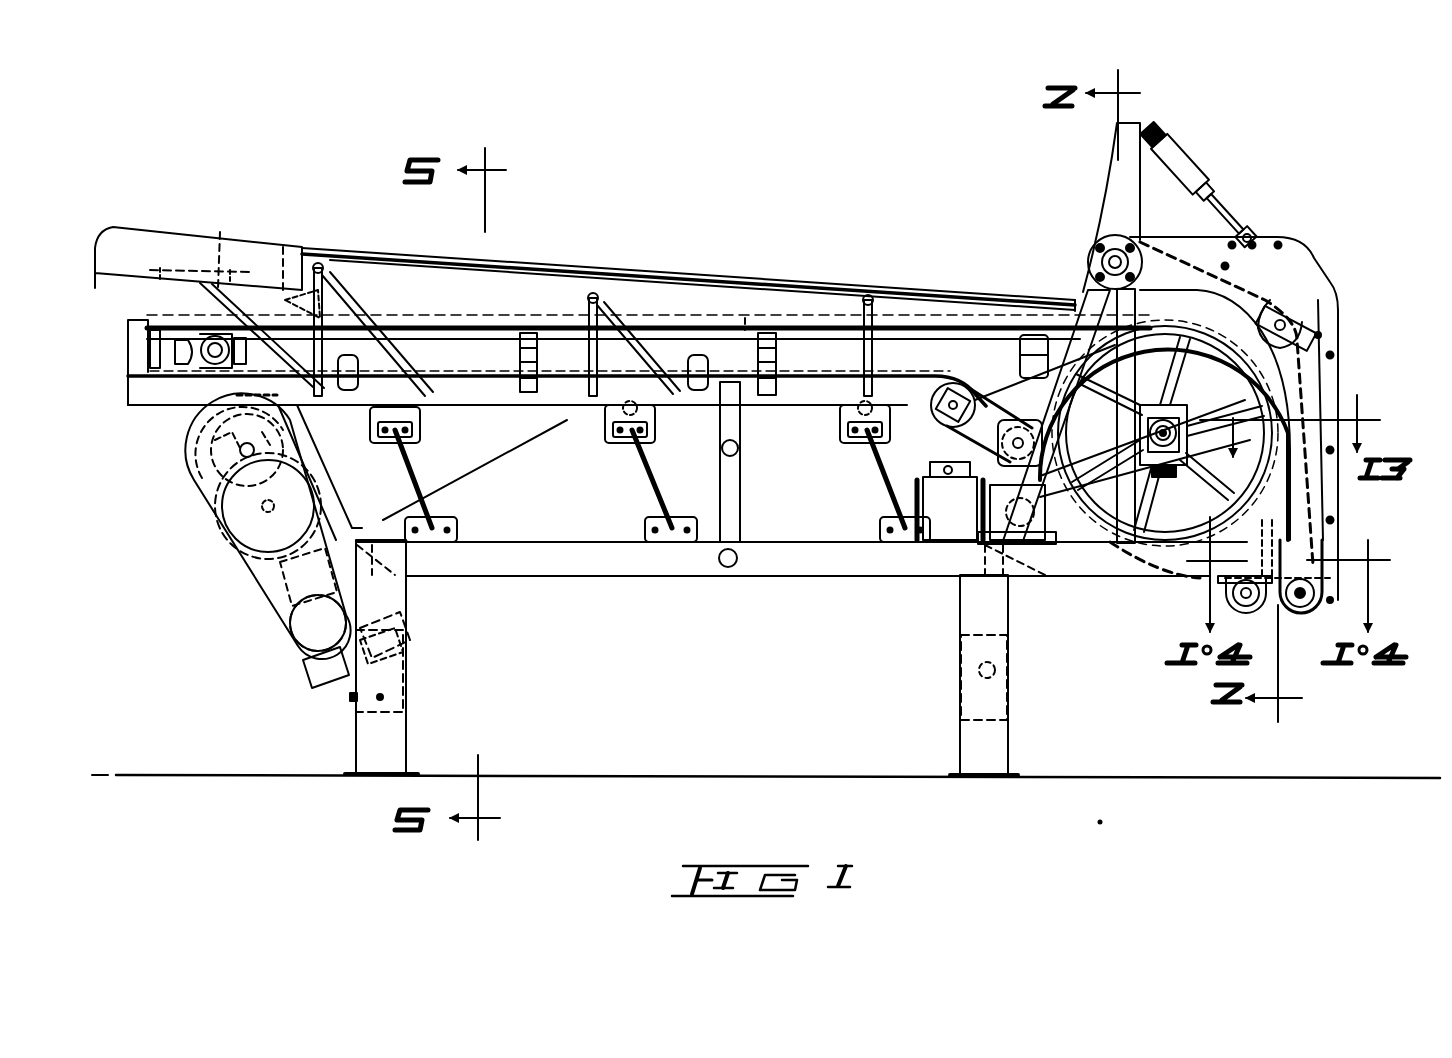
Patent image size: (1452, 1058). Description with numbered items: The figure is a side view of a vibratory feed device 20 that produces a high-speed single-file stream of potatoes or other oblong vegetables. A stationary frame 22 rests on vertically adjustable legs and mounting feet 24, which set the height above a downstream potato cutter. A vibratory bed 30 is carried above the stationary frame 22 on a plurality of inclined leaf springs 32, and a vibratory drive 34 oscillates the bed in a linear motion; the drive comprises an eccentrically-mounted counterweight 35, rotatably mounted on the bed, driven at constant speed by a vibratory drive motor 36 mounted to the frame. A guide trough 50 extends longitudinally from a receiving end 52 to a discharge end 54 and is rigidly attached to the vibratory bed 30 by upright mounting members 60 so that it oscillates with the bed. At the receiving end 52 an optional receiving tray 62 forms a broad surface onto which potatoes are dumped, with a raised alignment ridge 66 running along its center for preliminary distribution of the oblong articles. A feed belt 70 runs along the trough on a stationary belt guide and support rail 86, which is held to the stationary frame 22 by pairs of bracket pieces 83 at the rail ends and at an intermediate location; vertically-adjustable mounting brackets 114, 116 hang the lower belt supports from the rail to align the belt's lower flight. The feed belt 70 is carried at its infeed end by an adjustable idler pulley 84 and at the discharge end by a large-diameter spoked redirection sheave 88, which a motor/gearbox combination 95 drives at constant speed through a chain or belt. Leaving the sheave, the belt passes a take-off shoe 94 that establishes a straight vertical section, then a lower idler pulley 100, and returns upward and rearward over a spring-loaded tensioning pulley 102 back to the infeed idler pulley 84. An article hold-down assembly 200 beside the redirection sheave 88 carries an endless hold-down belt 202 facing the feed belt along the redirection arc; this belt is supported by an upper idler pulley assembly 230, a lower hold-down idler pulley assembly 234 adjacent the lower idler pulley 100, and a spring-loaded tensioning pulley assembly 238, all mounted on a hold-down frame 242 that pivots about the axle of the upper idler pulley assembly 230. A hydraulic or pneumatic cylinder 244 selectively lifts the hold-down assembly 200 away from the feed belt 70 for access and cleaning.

The feed device 20 is at (708, 183).
The stationary frame 22 is at (667, 575).
The legs and mounting feet 24 is at (388, 678).
The vibratory bed 30 is at (517, 408).
The leaf springs 32 is at (430, 472).
The vibratory drive 34 is at (215, 548).
The eccentrically-mounted counterweight 35 is at (192, 448).
The vibratory drive motor 36 is at (290, 658).
The guide trough 50 is at (525, 275).
The receiving end 52 is at (286, 232).
The discharge end 54 is at (1030, 288).
The upright mounting members 60 is at (324, 268).
The receiving tray 62 is at (155, 228).
The raised alignment ridge 66 is at (222, 236).
The feed belt 70 is at (745, 318).
The bracket pieces 83 is at (372, 345).
The infeed end idler pulley 84 is at (203, 373).
The support rail 86 is at (896, 337).
The redirection sheave 88 is at (1178, 352).
The take-off shoe 94 is at (1276, 606).
The motor/gearbox combination 95 is at (950, 500).
The lower idler pulley 100 is at (1228, 600).
The tensioning pulley 102 is at (945, 422).
The mounting bracket 114 is at (772, 376).
The mounting bracket 116 is at (520, 374).
The article hold-down assembly 200 is at (1290, 266).
The hold-down belt 202 is at (1316, 546).
The upper idler pulley assembly 230 is at (1100, 248).
The lower hold-down idler pulley assembly 234 is at (1330, 578).
The tensioning pulley assembly 238 is at (1334, 352).
The hold-down frame 242 is at (1326, 306).
The hydraulic or pneumatic cylinder 244 is at (1182, 168).